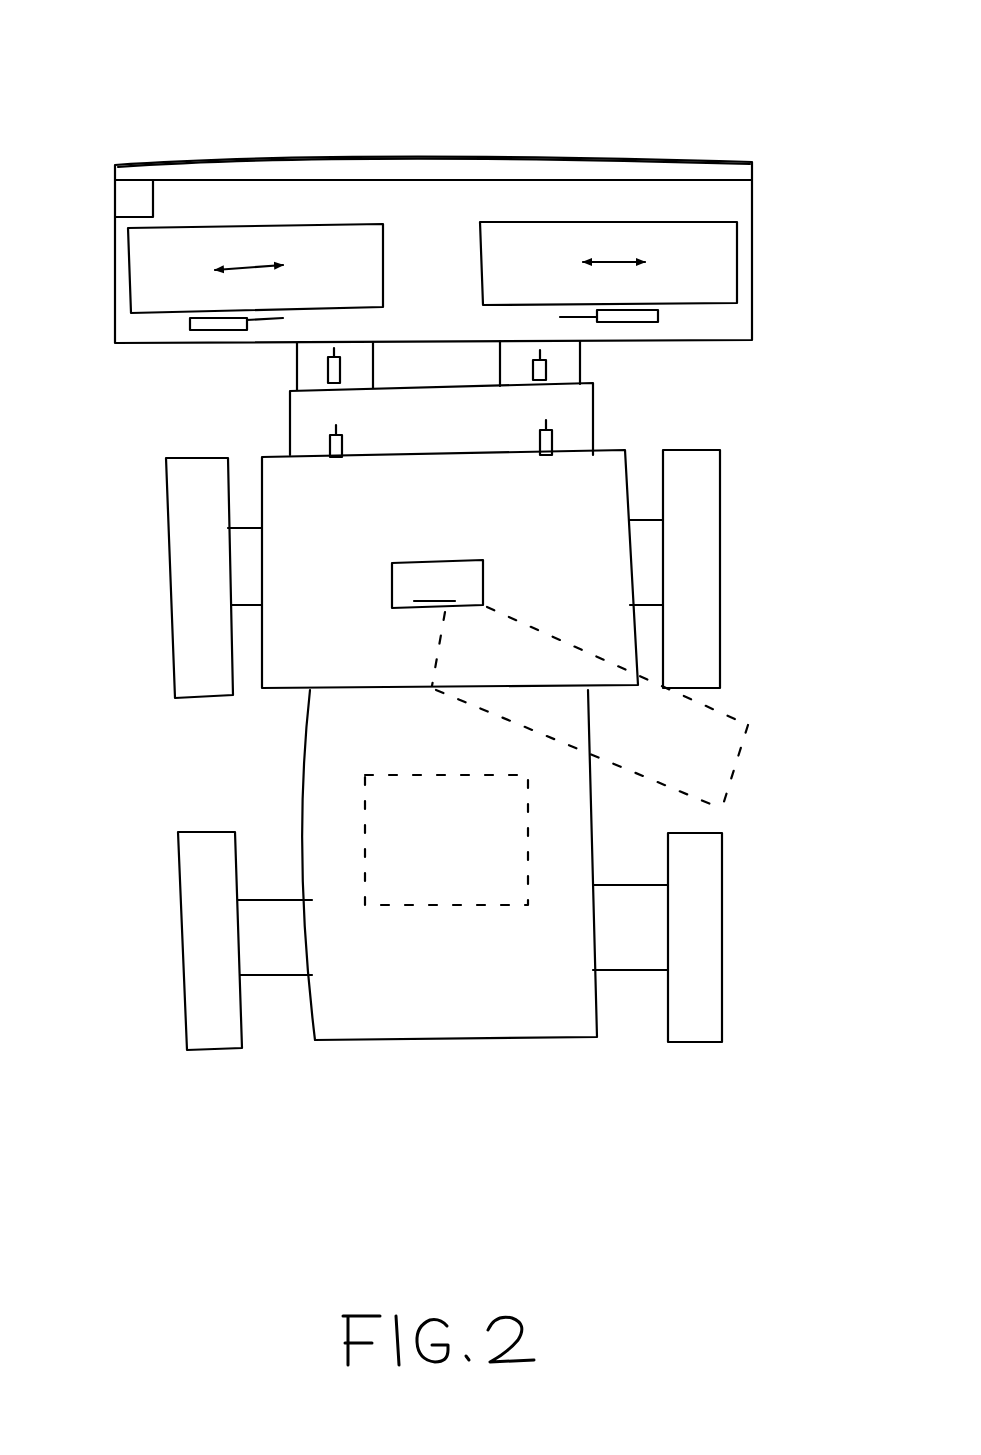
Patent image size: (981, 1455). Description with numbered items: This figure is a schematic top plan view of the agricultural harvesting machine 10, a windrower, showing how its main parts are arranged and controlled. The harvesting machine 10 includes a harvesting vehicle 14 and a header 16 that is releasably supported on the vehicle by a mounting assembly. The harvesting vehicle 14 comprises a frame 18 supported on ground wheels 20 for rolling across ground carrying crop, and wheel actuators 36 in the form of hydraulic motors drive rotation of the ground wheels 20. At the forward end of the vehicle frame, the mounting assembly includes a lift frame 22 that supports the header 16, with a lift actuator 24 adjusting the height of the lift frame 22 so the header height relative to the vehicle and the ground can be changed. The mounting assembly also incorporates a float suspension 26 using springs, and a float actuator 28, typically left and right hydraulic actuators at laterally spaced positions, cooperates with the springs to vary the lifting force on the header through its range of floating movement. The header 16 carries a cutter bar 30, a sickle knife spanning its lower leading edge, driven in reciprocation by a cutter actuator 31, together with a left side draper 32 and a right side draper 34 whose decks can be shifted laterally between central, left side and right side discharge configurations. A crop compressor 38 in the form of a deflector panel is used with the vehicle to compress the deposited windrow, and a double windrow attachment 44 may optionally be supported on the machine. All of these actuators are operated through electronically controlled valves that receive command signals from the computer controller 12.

The agricultural harvesting machine 10 is at (60, 82).
The computer controller 12 is at (437, 584).
The harvesting vehicle 14 is at (270, 757).
The header 16 is at (80, 274).
The frame 18 is at (300, 786).
The ground wheels 20 is at (180, 620).
The lift frame 22 is at (597, 407).
The lift actuator 24 is at (640, 436).
The float suspension 26 is at (275, 372).
The float actuator 28 is at (328, 379).
The cutter bar 30 is at (355, 166).
The cutter actuator 31 is at (125, 200).
The left side draper 32 is at (187, 329).
The right side draper 34 is at (658, 325).
The wheel actuators 36 is at (247, 560).
The crop compressor 38 is at (434, 905).
The double windrow attachment 44 is at (745, 728).